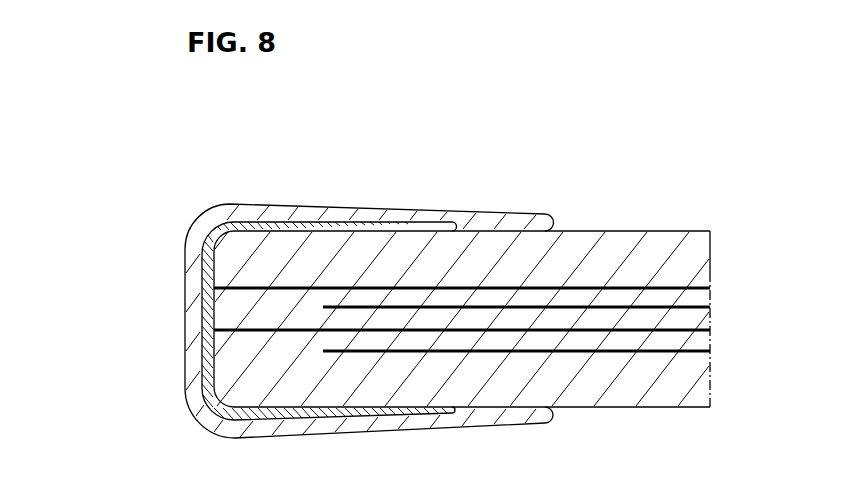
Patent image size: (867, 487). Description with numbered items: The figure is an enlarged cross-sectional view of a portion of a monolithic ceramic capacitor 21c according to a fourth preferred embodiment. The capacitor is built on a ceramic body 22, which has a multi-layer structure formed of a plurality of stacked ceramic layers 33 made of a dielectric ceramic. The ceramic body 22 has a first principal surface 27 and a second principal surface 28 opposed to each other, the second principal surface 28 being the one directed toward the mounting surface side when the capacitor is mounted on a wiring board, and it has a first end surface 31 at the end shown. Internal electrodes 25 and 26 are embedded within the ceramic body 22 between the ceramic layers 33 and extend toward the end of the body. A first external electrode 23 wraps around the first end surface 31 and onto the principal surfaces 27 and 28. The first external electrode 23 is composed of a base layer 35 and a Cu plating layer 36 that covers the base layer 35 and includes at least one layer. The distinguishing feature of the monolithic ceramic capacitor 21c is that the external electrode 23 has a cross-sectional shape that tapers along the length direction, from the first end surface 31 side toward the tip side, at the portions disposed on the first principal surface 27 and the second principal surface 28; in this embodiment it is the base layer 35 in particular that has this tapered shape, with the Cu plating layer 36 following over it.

The monolithic ceramic capacitor 21c is at (278, 110).
The ceramic body 22 is at (684, 229).
The first external electrode 23 is at (100, 288).
The internal electrode 25 is at (588, 327).
The internal electrode 26 is at (627, 310).
The first principal surface 27 is at (616, 231).
The second principal surface 28 is at (677, 408).
The first end surface 31 is at (205, 378).
The ceramic layers 33 is at (703, 338).
The base layer 35 is at (207, 293).
The Cu plating layer 36 is at (202, 353).